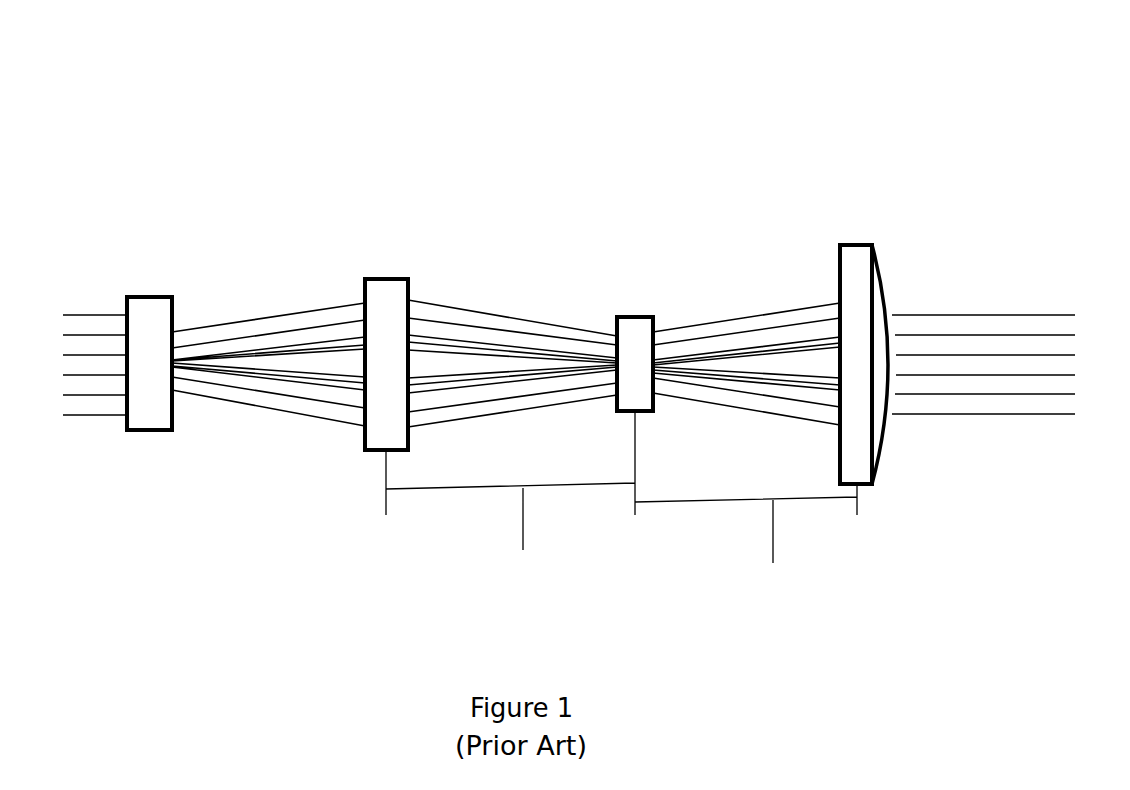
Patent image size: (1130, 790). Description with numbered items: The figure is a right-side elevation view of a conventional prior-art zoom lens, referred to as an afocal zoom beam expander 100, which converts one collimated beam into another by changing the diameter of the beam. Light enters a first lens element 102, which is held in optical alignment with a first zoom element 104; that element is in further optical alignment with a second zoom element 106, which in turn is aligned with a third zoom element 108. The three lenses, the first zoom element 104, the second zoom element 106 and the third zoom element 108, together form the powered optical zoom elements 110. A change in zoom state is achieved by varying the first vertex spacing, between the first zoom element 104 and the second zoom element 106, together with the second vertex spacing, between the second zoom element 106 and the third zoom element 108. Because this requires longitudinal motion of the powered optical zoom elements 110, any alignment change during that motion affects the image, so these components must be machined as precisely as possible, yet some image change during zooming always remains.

The afocal zoom beam expander 100 is at (569, 321).
The first lens element 102 is at (152, 297).
The first zoom element 104 is at (378, 279).
The second zoom element 106 is at (633, 317).
The third zoom element 108 is at (890, 302).
The powered optical zoom elements 110 is at (648, 261).